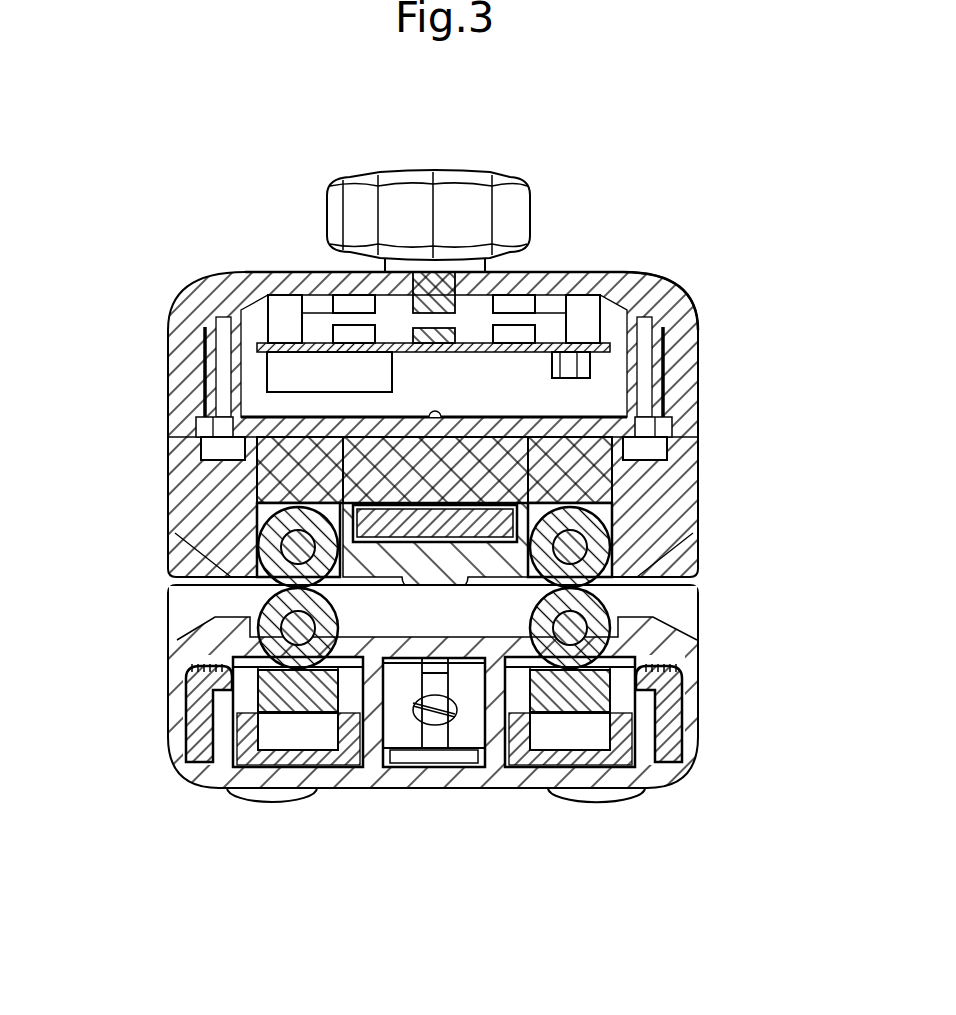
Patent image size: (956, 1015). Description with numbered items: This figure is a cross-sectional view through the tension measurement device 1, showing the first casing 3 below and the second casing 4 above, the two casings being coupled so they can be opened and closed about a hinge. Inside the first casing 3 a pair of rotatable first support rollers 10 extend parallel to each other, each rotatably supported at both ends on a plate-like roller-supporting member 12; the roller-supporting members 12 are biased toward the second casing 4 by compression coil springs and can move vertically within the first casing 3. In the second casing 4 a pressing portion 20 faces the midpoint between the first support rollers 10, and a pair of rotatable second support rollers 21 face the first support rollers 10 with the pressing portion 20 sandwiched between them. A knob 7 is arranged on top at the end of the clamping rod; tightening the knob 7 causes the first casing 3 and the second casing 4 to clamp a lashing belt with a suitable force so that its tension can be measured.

The tension measurement device 1 is at (147, 297).
The first casing 3 is at (703, 686).
The second casing 4 is at (702, 383).
The knob 7 is at (497, 178).
The first support roller 10 is at (268, 603).
The roller-supporting member 12 is at (638, 757).
The pressing portion 20 is at (440, 597).
The second support roller 21 is at (262, 530).